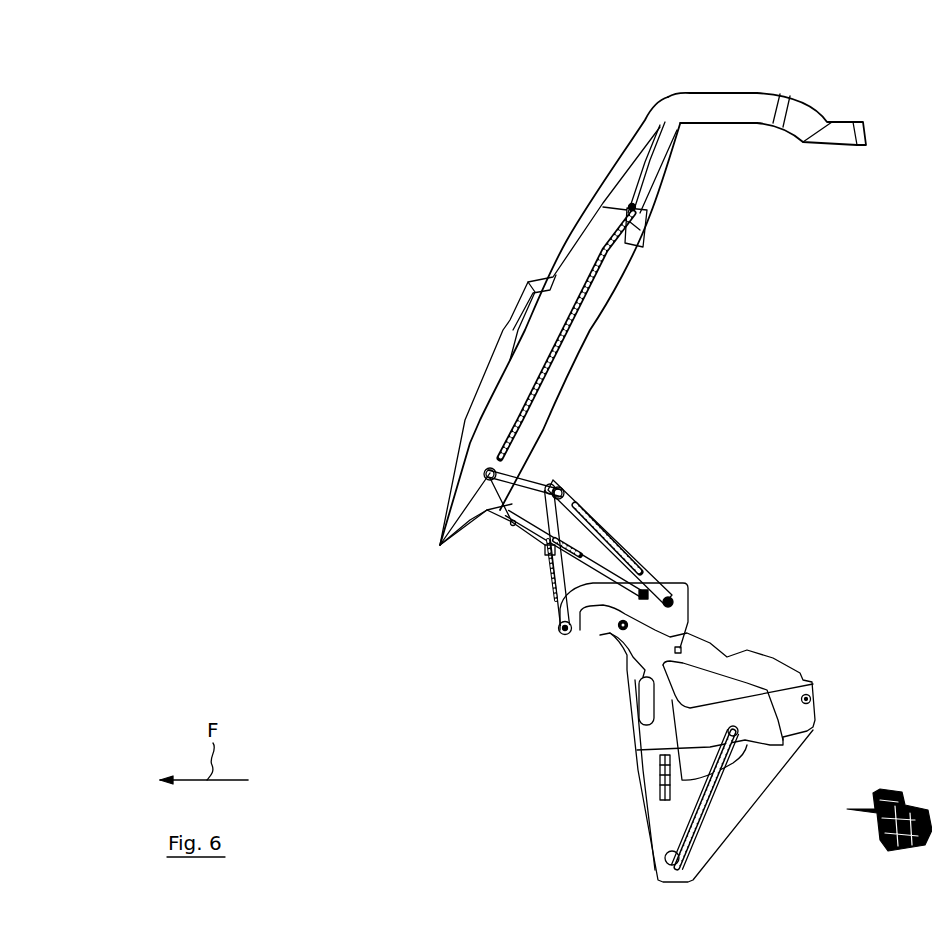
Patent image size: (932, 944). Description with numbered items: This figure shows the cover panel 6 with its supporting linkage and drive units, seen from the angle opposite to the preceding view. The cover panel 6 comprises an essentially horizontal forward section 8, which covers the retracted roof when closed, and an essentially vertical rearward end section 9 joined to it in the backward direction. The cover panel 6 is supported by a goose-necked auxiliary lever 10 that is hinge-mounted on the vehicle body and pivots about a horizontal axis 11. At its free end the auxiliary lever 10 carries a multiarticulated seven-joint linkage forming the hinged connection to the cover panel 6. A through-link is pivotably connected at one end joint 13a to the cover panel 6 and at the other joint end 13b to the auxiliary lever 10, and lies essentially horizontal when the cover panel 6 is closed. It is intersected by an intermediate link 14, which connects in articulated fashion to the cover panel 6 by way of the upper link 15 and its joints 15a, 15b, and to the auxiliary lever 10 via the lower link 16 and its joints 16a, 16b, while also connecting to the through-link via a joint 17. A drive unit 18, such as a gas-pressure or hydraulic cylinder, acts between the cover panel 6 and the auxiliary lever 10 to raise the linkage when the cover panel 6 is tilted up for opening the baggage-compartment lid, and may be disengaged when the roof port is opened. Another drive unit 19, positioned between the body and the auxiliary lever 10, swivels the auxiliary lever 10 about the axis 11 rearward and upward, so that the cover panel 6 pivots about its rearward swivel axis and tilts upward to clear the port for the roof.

The cover panel 6 is at (575, 150).
The forward section 8 is at (525, 256).
The rearward end section 9 is at (803, 96).
The auxiliary lever 10 is at (685, 622).
The horizontal axis 11 is at (813, 684).
The end joint 13a is at (452, 518).
The joint end 13b is at (643, 593).
The intermediate link 14 is at (587, 508).
The upper link 15 is at (540, 478).
The joint 15a is at (495, 473).
The joint 15b is at (550, 492).
The lower link 16 is at (545, 600).
The joint 16a is at (523, 560).
The joint 16b is at (566, 640).
The joint 17 is at (512, 525).
The drive unit 18 is at (605, 527).
The drive unit 19 is at (687, 817).